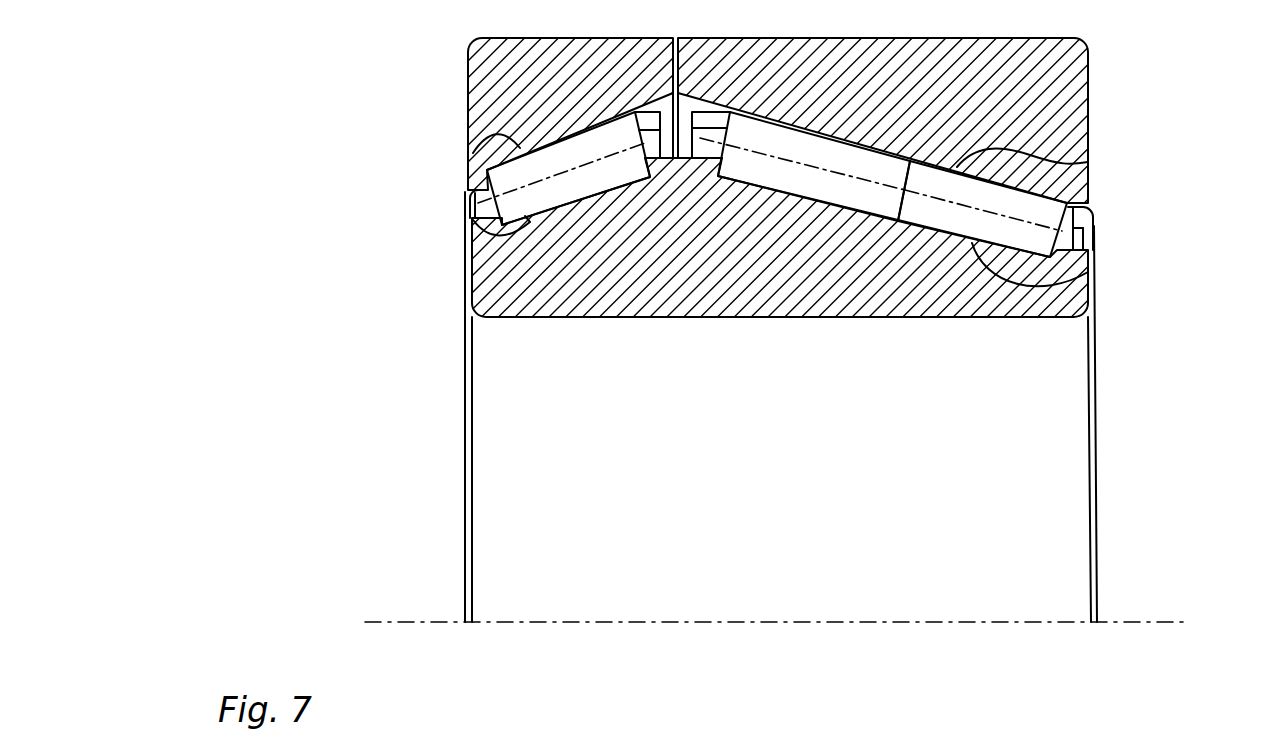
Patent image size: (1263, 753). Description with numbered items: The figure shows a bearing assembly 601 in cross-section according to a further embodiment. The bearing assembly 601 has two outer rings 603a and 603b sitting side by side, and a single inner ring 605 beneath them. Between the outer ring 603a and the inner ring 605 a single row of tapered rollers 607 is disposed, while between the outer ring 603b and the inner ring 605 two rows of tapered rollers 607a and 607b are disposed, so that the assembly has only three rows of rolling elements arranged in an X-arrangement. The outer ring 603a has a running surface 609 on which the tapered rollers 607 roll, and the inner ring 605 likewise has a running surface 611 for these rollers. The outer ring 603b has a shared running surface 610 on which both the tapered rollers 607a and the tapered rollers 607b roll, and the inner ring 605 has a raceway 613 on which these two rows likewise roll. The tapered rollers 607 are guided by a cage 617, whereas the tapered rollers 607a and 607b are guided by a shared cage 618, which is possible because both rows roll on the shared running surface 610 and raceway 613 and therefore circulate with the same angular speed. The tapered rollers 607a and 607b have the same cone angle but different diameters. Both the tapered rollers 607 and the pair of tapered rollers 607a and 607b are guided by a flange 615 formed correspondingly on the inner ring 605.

The bearing assembly 601 is at (348, 120).
The outer ring 603a is at (468, 57).
The outer ring 603b is at (1075, 80).
The inner ring 605 is at (472, 283).
The tapered rollers 607 is at (564, 168).
The tapered rollers 607a is at (982, 209).
The tapered rollers 607b is at (805, 166).
The running surface 609 is at (470, 152).
The shared running surface 610 is at (1088, 162).
The running surface 611 is at (470, 232).
The raceway 613 is at (1087, 277).
The flange 615 is at (713, 165).
The cage 617 is at (467, 194).
The shared cage 618 is at (1093, 222).